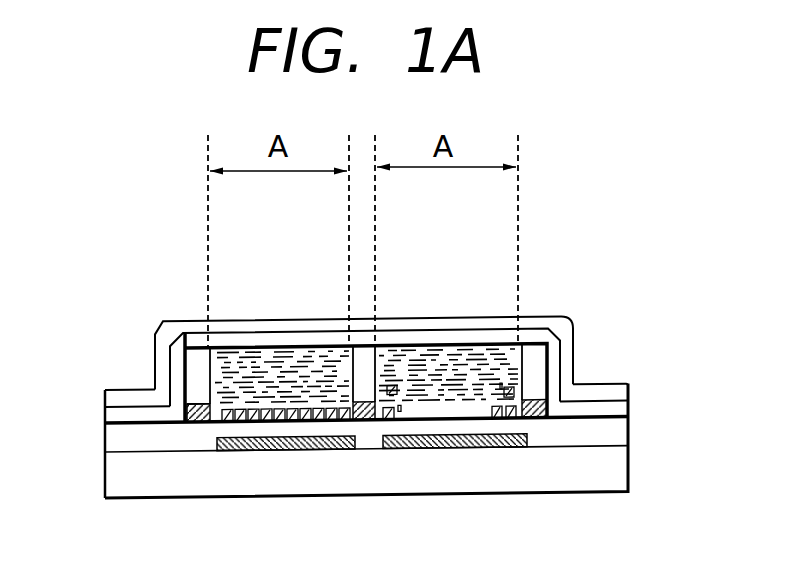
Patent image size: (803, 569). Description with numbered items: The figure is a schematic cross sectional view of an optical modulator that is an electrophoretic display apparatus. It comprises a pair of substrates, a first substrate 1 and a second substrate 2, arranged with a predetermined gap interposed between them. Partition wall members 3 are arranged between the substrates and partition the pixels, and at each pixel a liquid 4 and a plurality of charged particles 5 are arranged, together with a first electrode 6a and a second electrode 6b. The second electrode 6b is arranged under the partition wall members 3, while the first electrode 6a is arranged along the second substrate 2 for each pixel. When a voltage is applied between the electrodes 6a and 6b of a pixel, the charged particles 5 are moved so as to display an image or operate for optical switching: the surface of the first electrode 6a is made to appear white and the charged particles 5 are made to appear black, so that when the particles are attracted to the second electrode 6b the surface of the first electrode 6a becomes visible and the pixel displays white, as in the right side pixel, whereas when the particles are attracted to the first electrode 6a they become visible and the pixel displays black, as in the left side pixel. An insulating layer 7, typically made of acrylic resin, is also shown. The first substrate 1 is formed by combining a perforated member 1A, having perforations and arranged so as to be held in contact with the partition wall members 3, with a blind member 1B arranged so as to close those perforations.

The first substrate 1 is at (404, 299).
The perforated member 1A is at (630, 405).
The blind member 1B is at (560, 323).
The second substrate 2 is at (617, 468).
The partition wall member 3 is at (197, 368).
The liquid 4 is at (292, 372).
The charged particles 5 is at (237, 410).
The first electrode 6a is at (285, 451).
The second electrode 6b is at (197, 401).
The insulating layer 7 is at (118, 440).